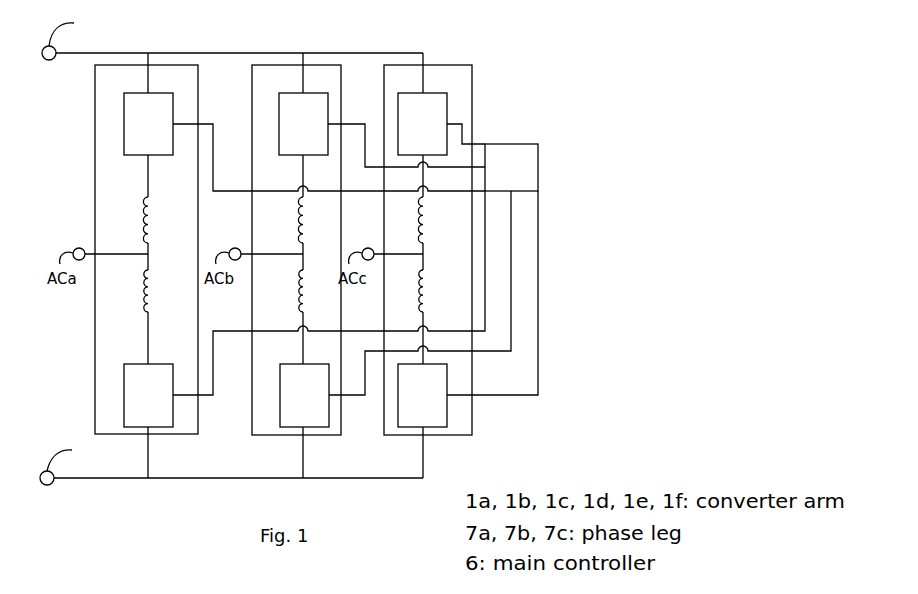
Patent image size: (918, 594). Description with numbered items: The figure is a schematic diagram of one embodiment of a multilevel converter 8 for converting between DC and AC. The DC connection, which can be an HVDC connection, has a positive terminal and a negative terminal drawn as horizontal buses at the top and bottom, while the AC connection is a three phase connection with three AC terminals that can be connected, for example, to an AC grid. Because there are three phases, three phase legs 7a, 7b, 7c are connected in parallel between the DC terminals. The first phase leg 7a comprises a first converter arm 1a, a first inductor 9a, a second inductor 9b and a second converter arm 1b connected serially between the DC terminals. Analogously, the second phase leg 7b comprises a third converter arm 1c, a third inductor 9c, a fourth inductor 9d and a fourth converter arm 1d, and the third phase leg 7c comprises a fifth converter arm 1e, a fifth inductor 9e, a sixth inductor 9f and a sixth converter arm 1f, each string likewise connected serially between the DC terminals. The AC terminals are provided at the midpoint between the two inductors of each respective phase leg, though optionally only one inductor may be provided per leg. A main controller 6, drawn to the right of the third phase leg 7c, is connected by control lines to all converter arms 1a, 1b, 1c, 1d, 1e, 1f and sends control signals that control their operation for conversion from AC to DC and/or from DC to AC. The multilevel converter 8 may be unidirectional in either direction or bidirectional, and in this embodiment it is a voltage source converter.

The first converter arm 1a is at (148, 124).
The second converter arm 1b is at (148, 395).
The third converter arm 1c is at (303, 124).
The fourth converter arm 1d is at (304, 395).
The fifth converter arm 1e is at (422, 124).
The sixth converter arm 1f is at (422, 395).
The main controller 6 is at (511, 167).
The first phase leg 7a is at (146, 249).
The second phase leg 7b is at (296, 250).
The third phase leg 7c is at (428, 250).
The multilevel converter 8 is at (470, 53).
The first inductor 9a is at (151, 211).
The second inductor 9b is at (151, 284).
The third inductor 9c is at (306, 211).
The fourth inductor 9d is at (306, 284).
The fifth inductor 9e is at (426, 211).
The sixth inductor 9f is at (426, 284).